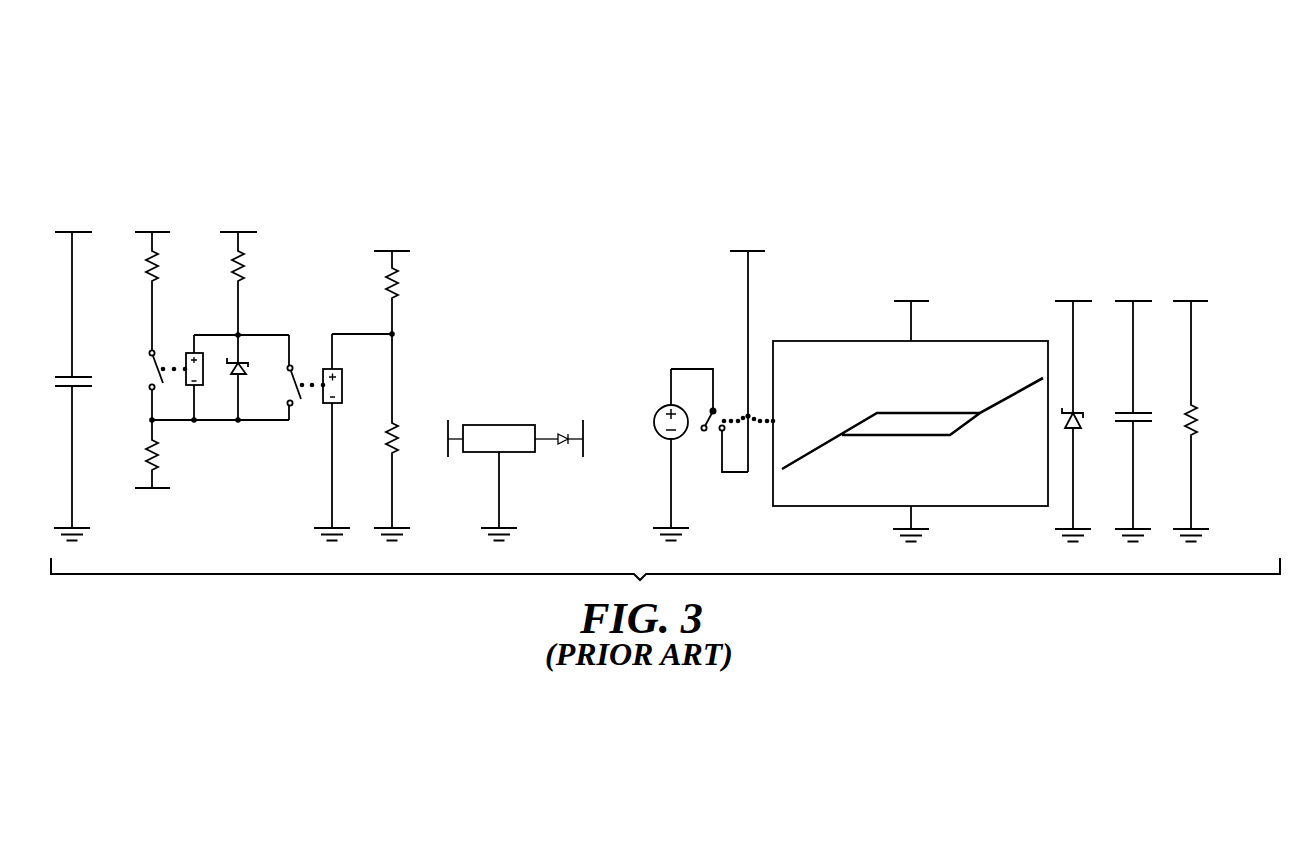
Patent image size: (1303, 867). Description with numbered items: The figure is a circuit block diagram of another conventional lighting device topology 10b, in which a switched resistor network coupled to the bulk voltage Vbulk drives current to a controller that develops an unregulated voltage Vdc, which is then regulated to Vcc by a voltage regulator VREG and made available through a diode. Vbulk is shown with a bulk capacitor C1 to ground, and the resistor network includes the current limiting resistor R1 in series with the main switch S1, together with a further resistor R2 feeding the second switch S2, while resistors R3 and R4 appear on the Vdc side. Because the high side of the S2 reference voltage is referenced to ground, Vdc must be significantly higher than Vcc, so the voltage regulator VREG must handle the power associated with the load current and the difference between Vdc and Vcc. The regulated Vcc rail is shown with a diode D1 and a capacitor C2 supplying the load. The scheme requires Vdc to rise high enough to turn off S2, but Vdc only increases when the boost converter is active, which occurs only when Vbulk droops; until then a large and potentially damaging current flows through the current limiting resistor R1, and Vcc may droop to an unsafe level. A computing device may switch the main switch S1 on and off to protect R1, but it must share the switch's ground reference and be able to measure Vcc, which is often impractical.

The conventional lighting device topology 10b is at (358, 120).
The bulk capacitor C1 is at (81, 397).
The current limiting resistor R1 is at (168, 266).
The resistor R2 is at (253, 266).
The resistor R3 is at (408, 283).
The resistor R4 is at (377, 438).
The main switch S1 is at (155, 369).
The switch S2 is at (293, 385).
The voltage regulator VREG is at (499, 438).
The zener diode D1 is at (1082, 407).
The output capacitor C2 is at (1141, 403).